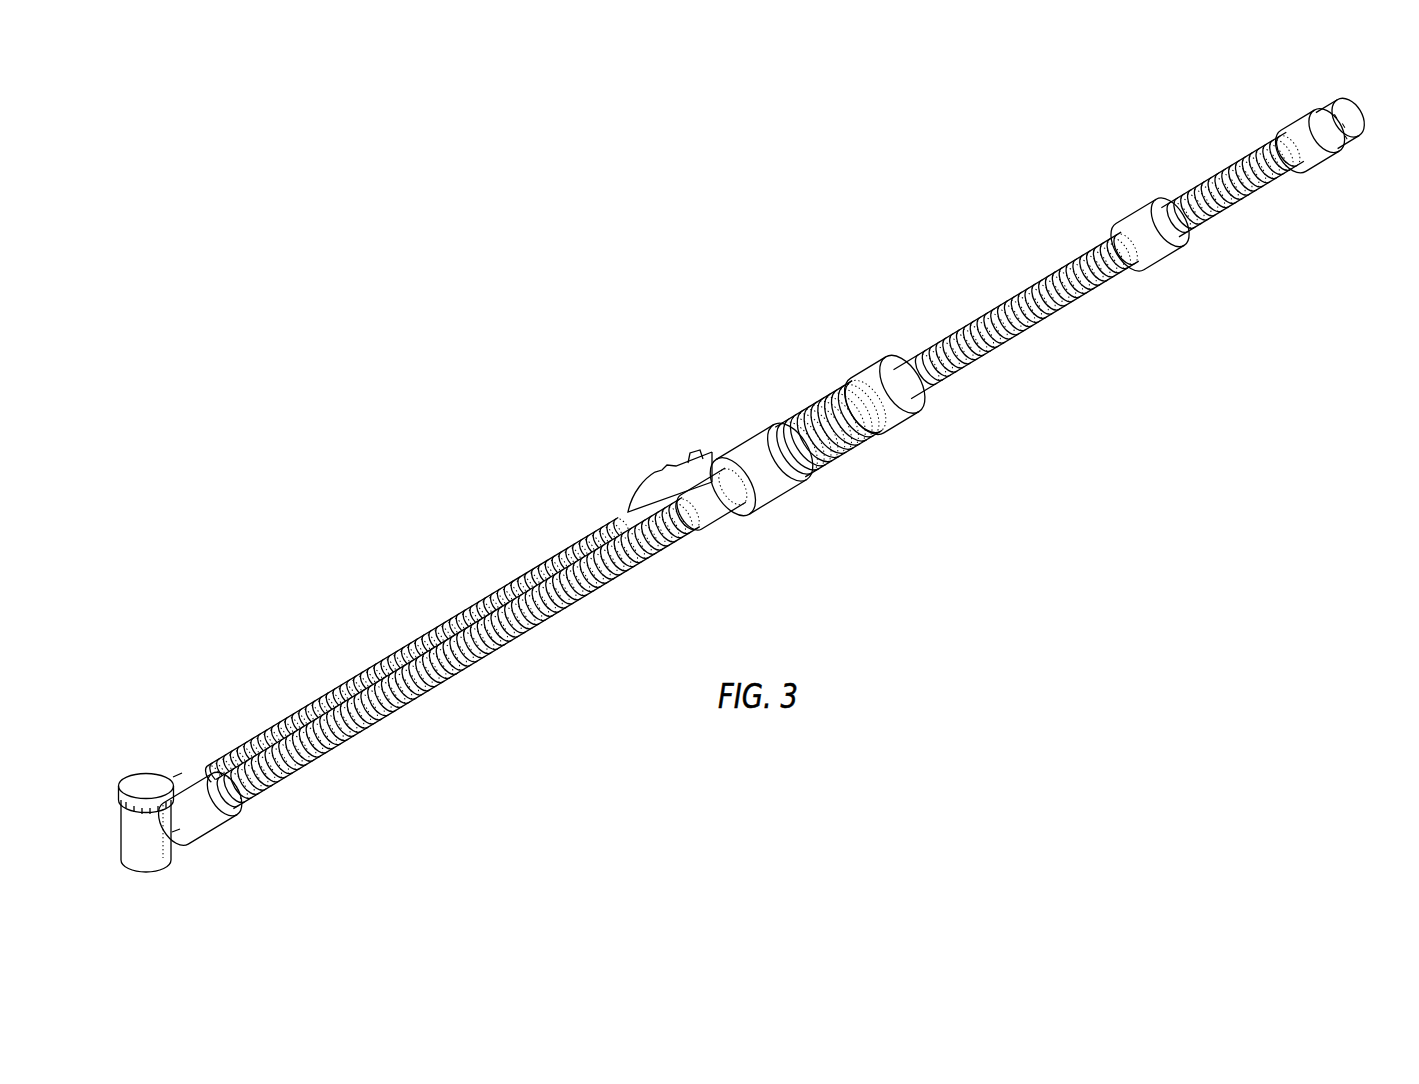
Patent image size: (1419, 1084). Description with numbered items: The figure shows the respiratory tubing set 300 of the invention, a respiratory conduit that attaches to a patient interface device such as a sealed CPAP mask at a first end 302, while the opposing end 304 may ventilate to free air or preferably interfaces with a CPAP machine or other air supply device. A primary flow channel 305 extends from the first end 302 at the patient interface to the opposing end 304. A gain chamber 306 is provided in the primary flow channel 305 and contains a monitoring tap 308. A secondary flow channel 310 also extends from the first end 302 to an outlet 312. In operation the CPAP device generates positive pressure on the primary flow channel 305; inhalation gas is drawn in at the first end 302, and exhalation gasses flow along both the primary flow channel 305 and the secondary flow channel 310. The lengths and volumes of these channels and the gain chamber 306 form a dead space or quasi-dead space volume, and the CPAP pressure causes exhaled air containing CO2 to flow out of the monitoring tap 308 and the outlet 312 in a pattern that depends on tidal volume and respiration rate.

The respiratory tubing set 300 is at (891, 240).
The first end 302 is at (147, 855).
The opposing end 304 is at (1340, 152).
The primary flow channel 305 is at (1023, 280).
The gain chamber 306 is at (882, 430).
The monitoring tap 308 is at (690, 452).
The secondary flow channel 310 is at (458, 608).
The outlet 312 is at (650, 473).